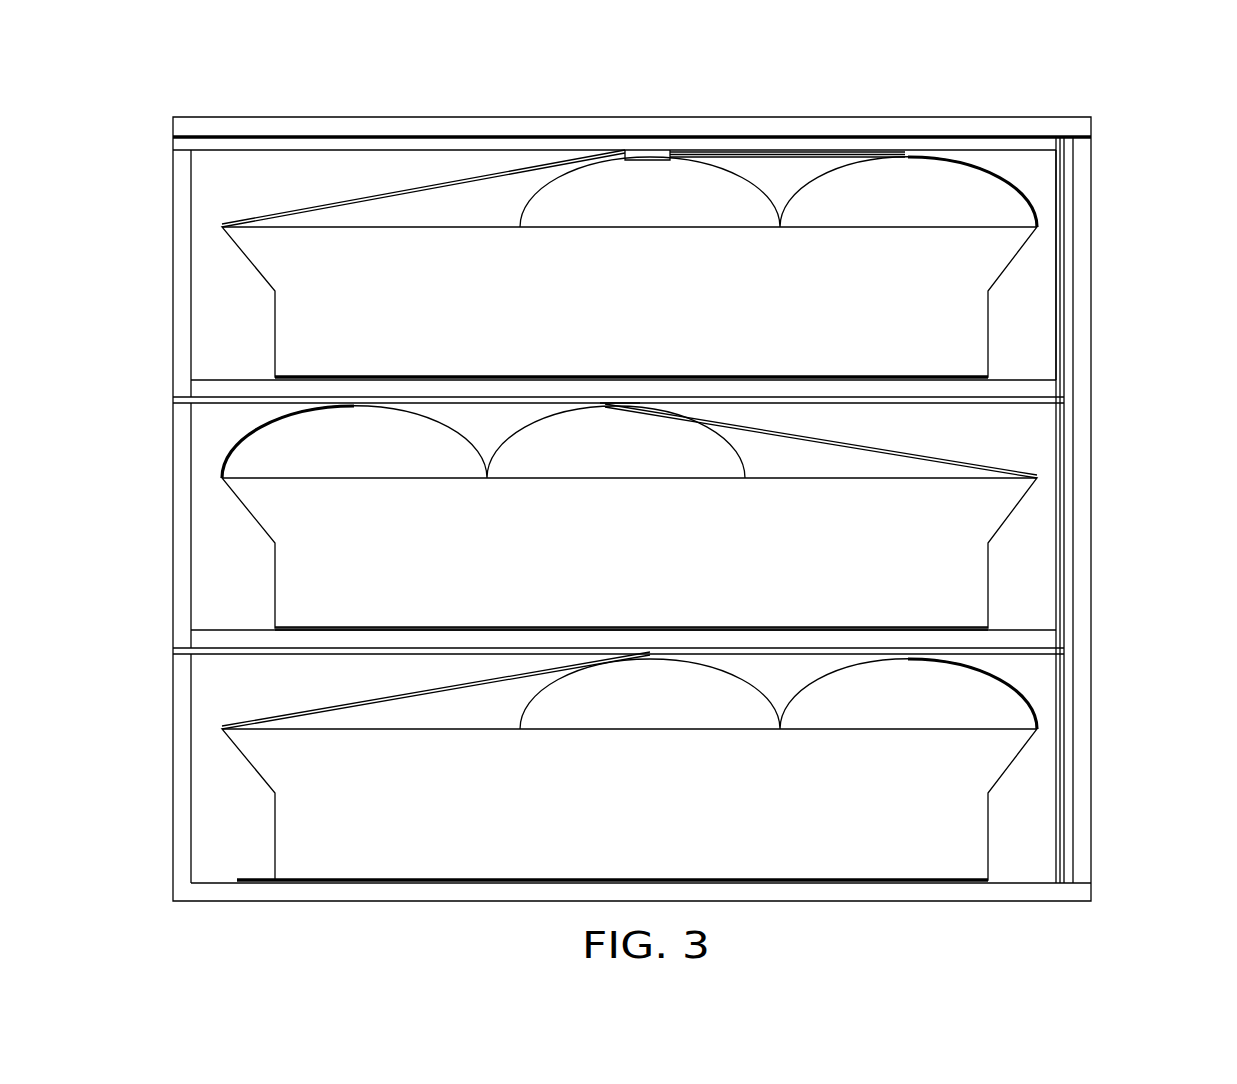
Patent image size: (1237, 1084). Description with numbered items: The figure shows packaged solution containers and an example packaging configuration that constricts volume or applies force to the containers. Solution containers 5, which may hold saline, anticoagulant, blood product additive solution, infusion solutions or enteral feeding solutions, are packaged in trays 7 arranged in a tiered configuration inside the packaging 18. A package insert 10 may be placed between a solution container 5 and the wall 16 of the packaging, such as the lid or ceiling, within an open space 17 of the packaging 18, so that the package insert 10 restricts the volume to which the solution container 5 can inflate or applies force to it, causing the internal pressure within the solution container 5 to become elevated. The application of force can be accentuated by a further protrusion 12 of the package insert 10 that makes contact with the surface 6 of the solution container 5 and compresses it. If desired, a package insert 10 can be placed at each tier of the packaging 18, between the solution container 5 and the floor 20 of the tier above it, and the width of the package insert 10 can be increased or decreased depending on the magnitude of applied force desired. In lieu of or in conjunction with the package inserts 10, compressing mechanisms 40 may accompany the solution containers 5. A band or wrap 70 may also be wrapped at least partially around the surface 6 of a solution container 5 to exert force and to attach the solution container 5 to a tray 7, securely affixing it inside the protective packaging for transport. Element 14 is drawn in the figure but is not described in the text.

The solution container 5 is at (955, 705).
The surface of the solution container 6 is at (690, 117).
The tray 7 is at (965, 322).
The package insert 10 is at (1040, 145).
The protrusion 12 is at (642, 160).
The side wall 14 is at (1038, 273).
The wall 16 is at (940, 127).
The open space 17 is at (1030, 355).
The packaging 18 is at (1080, 872).
The floor 20 is at (918, 403).
The compressing mechanism 40 is at (1067, 143).
The band or wrap 70 is at (993, 470).